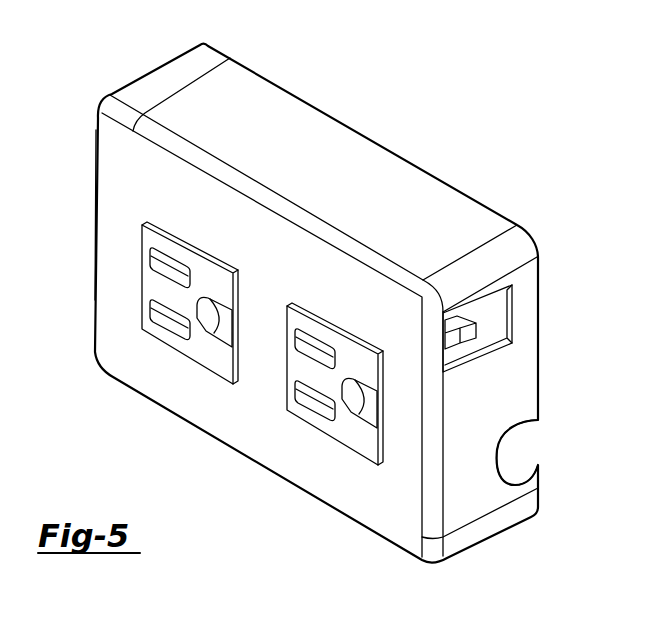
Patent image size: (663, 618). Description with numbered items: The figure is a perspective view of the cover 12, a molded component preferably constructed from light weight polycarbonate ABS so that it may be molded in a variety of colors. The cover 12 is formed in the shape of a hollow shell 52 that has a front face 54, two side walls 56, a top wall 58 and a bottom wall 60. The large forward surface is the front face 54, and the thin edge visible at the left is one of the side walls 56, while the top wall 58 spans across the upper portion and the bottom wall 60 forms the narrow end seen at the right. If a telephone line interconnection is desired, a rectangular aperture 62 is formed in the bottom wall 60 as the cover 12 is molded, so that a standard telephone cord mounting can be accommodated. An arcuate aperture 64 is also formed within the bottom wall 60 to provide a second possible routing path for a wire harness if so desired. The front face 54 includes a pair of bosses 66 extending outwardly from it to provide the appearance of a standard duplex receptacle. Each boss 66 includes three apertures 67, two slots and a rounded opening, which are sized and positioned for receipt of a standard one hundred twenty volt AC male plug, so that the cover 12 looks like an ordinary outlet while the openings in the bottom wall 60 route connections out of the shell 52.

The cover 12 is at (474, 118).
The hollow shell 52 is at (118, 73).
The front face 54 is at (168, 396).
The side walls 56 is at (250, 83).
The top wall 58 is at (95, 187).
The bottom wall 60 is at (530, 383).
The rectangular aperture 62 is at (510, 305).
The arcuate aperture 64 is at (537, 465).
The bosses 66 is at (208, 363).
The apertures 67 is at (200, 331).